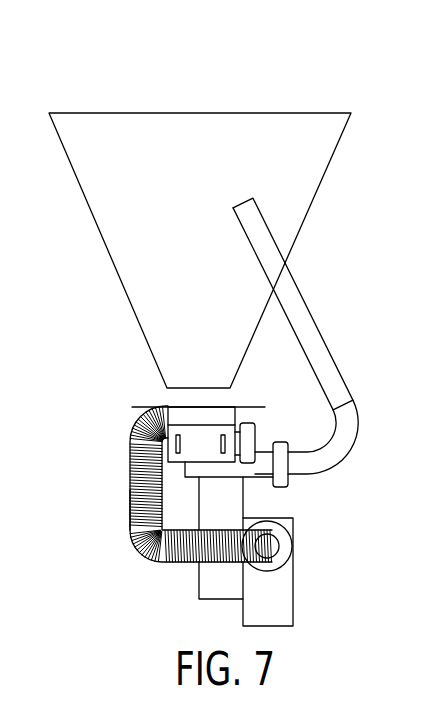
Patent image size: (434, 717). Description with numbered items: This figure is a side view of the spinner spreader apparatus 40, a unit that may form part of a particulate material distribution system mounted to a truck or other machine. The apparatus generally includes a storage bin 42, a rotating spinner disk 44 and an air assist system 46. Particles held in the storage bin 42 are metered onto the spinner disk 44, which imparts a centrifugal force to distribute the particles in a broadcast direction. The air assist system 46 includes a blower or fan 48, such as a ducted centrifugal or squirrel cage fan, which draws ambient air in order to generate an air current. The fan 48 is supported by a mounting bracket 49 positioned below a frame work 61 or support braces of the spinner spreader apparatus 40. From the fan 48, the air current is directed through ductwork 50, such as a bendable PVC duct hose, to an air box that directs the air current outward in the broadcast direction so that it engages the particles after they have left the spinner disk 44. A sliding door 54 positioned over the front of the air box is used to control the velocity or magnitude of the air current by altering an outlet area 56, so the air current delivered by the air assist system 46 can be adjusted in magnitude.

The spinner spreader apparatus 40 is at (288, 98).
The storage bin 42 is at (83, 165).
The frame work 61 is at (308, 335).
The spinner disk 44 is at (220, 409).
The outlet area 56 is at (192, 414).
The sliding door 54 is at (197, 443).
The ductwork 50 is at (130, 515).
The mounting bracket 49 is at (227, 499).
The fan 48 is at (275, 610).
The air assist system 46 is at (328, 523).